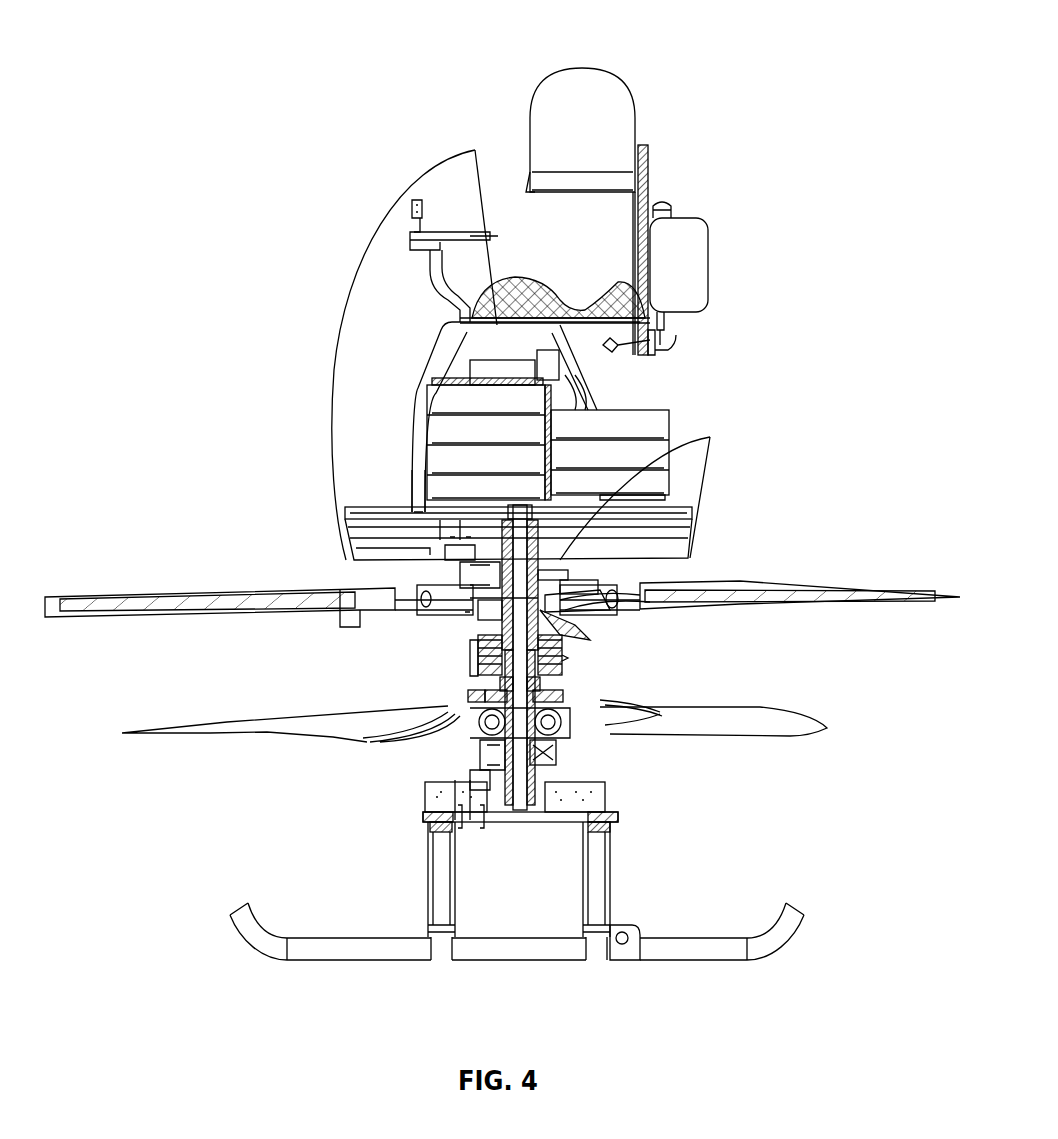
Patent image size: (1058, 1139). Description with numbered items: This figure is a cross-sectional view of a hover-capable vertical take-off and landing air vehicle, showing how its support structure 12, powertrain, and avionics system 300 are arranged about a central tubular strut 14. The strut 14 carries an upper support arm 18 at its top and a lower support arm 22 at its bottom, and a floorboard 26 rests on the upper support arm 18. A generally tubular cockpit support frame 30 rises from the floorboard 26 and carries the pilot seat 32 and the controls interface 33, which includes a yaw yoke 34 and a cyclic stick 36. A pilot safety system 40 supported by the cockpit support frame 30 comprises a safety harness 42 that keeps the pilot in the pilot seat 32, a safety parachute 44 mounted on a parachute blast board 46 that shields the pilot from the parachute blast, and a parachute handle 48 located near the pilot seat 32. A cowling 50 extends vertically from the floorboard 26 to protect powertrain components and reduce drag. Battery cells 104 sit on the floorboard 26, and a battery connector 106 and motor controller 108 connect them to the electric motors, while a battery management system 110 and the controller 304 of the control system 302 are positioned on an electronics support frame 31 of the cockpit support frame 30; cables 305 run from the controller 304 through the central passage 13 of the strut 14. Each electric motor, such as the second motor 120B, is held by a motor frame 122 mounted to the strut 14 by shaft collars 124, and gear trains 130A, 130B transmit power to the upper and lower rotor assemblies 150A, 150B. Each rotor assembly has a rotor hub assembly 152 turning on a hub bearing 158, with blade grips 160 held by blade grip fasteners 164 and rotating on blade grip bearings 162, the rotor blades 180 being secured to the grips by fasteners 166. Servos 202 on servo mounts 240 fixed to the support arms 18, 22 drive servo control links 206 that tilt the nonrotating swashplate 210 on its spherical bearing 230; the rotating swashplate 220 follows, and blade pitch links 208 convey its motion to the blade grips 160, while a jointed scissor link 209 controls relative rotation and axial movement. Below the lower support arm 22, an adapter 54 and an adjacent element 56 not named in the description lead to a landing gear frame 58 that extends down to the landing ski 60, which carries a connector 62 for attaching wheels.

The pilot safety system 40 is at (770, 42).
The controls interface 33 is at (278, 142).
The avionics system 300 is at (838, 398).
The safety harness 42 is at (530, 132).
The parachute blast board 46 is at (650, 160).
The safety parachute 44 is at (708, 232).
The parachute handle 48 is at (660, 355).
The pilot seat 32 is at (545, 280).
The yaw yoke 34 is at (412, 232).
The cyclic stick 36 is at (418, 200).
The cowling 50 is at (414, 178).
The cockpit support frame 30 is at (450, 330).
The battery management system 110 is at (470, 368).
The electronics support frame 31 is at (578, 385).
The control system 302 is at (605, 360).
The controller 304 is at (605, 360).
The battery connector 106 is at (425, 393).
The battery cells 104 is at (412, 433).
The motor controller 108 is at (678, 478).
The cables 305 is at (500, 610).
The spherical bearing 230 is at (694, 512).
The servo mounts 240 is at (678, 496).
The upper support arm 18 is at (355, 548).
The floorboard 26 is at (352, 528).
The nonrotating swashplate 210 is at (400, 520).
The servos 202 is at (345, 560).
The rotating swashplate 220 is at (473, 567).
The central passage 13 is at (515, 820).
The rotor hub assembly 152 is at (490, 620).
The blade grip fastener 164 is at (562, 600).
The blade grip bearing 162 is at (610, 590).
The first gear train 130A is at (590, 628).
The shaft collars 124 is at (566, 657).
The second electric motor 120B is at (470, 650).
The motor frame 122 is at (500, 686).
The strut 14 is at (570, 690).
The second gear train 130B is at (470, 697).
The hub bearing 158 is at (563, 705).
The blade pitch links 208 is at (557, 750).
The fasteners 166 is at (482, 742).
The jointed scissor link 209 is at (470, 770).
The servo control link 206 is at (470, 790).
The lower support arm 22 is at (590, 790).
The frame plate 56 is at (612, 805).
The adapter 54 is at (618, 822).
The landing gear frame 58 is at (612, 850).
The support structure 12 is at (428, 875).
The connector 62 is at (635, 925).
The landing ski 60 is at (790, 935).
The upper rotor assembly 150A is at (176, 596).
The lower rotor assembly 150B is at (228, 715).
The rotor blades 180 is at (88, 598).
The blade grips 160 is at (400, 615).